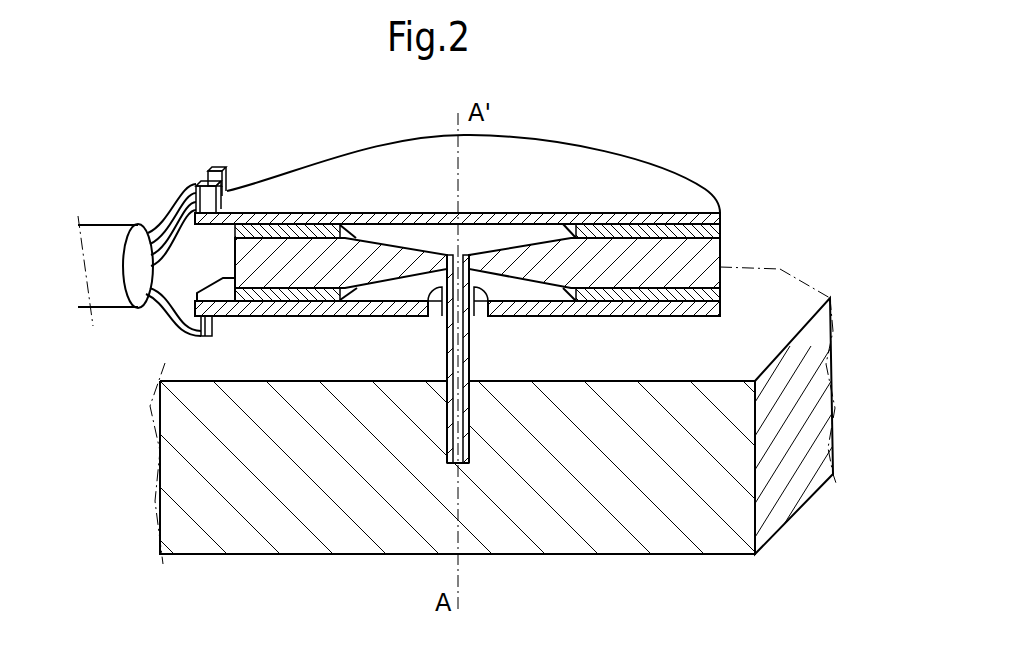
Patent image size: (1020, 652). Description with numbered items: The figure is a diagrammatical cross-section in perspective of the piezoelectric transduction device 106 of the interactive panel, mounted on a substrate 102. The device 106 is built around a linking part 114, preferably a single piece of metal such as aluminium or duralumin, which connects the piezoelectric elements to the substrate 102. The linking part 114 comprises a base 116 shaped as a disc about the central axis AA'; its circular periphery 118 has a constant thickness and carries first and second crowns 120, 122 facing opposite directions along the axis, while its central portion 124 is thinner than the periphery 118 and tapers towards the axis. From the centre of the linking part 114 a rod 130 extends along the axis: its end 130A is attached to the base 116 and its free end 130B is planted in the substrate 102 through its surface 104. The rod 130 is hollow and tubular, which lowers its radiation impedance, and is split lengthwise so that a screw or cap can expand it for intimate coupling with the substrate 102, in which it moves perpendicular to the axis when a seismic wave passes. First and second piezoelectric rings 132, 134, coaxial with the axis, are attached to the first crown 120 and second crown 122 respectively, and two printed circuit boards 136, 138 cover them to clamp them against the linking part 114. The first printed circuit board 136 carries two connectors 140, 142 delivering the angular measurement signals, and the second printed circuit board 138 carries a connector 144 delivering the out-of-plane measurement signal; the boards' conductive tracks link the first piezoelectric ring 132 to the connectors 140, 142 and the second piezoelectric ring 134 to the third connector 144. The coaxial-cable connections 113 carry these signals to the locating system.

The substrate 102 is at (235, 540).
The surface 104 is at (798, 286).
The piezoelectric transduction device 106 is at (473, 136).
The connections 113 is at (104, 232).
The linking part 114 is at (732, 237).
The base 116 is at (722, 260).
The circular periphery 118 is at (643, 273).
The first crown 120 is at (284, 226).
The second crown 122 is at (265, 308).
The central portion 124 is at (477, 267).
The rod 130 is at (466, 429).
The end of the rod 130A is at (440, 284).
The free end of the rod 130B is at (469, 462).
The first piezoelectric ring 132 is at (640, 226).
The second piezoelectric ring 134 is at (681, 297).
The first printed circuit board 136 is at (336, 152).
The second printed circuit board 138 is at (332, 316).
The first connector 140 is at (232, 196).
The second connector 142 is at (216, 169).
The third connector 144 is at (216, 328).